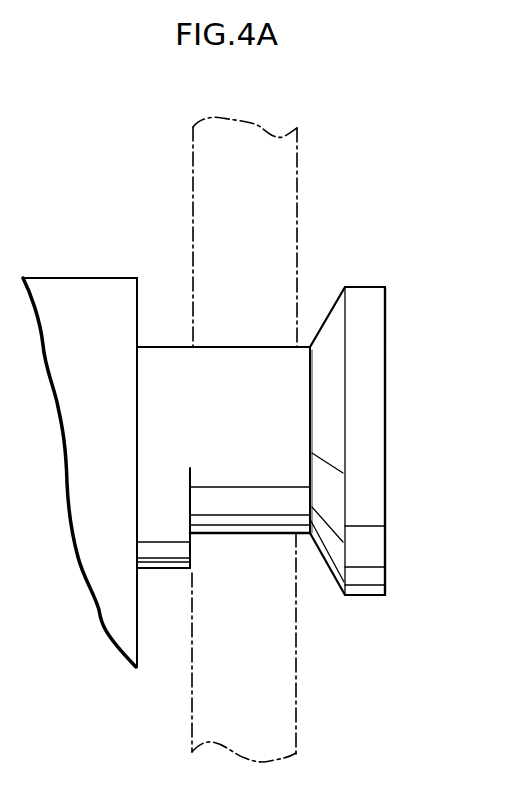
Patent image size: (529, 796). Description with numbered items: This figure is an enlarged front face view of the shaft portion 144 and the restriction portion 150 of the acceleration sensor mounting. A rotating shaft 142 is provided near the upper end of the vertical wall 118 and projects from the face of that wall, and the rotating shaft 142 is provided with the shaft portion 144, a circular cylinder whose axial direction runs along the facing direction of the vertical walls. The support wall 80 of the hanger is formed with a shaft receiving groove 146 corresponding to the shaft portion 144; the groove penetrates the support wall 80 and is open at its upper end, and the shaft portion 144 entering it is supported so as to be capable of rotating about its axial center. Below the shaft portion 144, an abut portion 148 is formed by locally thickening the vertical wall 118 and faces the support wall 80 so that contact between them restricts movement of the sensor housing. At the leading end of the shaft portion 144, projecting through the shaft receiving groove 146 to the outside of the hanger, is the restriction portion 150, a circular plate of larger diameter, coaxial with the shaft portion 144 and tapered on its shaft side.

The vertical wall 118 is at (80, 276).
The support wall 80 is at (298, 215).
The rotating shaft 142 is at (390, 345).
The shaft portion 144 is at (243, 470).
The shaft receiving groove 146 is at (252, 347).
The abut portion 148 is at (160, 570).
The restriction portion 150 is at (388, 403).